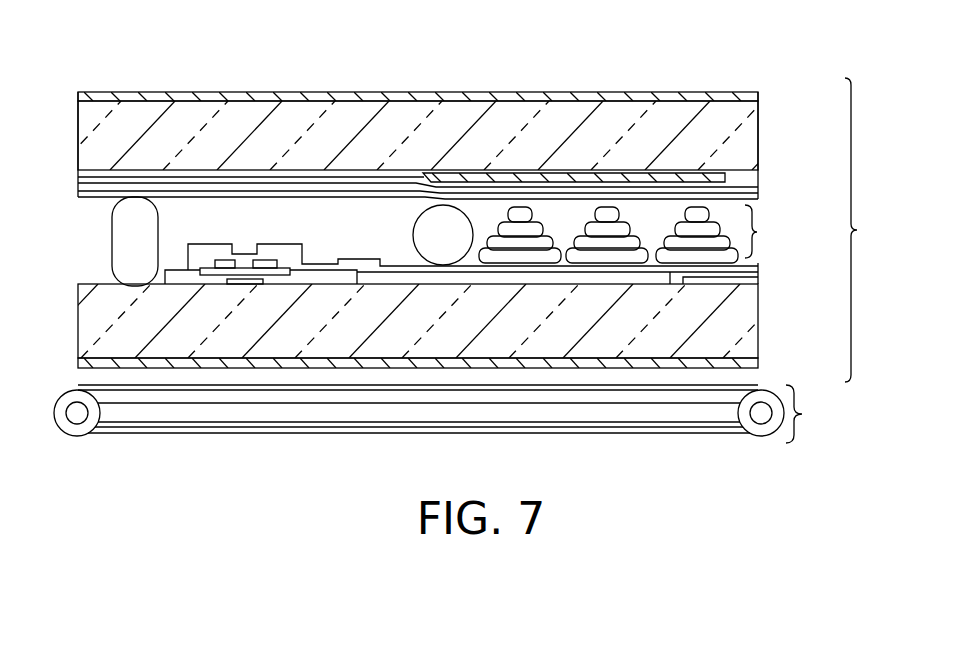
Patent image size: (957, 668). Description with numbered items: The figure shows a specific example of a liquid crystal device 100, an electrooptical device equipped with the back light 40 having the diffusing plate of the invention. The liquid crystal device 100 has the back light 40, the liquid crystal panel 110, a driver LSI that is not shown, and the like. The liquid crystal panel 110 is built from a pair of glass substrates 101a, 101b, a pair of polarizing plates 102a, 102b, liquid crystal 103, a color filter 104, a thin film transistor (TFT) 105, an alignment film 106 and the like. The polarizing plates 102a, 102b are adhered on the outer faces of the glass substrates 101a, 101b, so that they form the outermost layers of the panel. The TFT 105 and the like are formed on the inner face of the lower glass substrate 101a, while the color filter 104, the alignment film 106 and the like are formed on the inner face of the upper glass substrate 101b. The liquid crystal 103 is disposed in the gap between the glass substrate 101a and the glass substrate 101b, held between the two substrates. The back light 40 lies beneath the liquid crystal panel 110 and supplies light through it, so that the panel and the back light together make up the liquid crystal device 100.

The liquid crystal device 100 is at (702, 68).
The liquid crystal panel 110 is at (876, 230).
The glass substrate 101a is at (752, 311).
The glass substrate 101b is at (752, 141).
The polarizing plate 102a is at (753, 362).
The polarizing plate 102b is at (753, 97).
The liquid crystal 103 is at (760, 232).
The color filter 104 is at (727, 178).
The thin film transistor (TFT) 105 is at (268, 262).
The alignment film 106 is at (753, 198).
The back light 40 is at (446, 414).